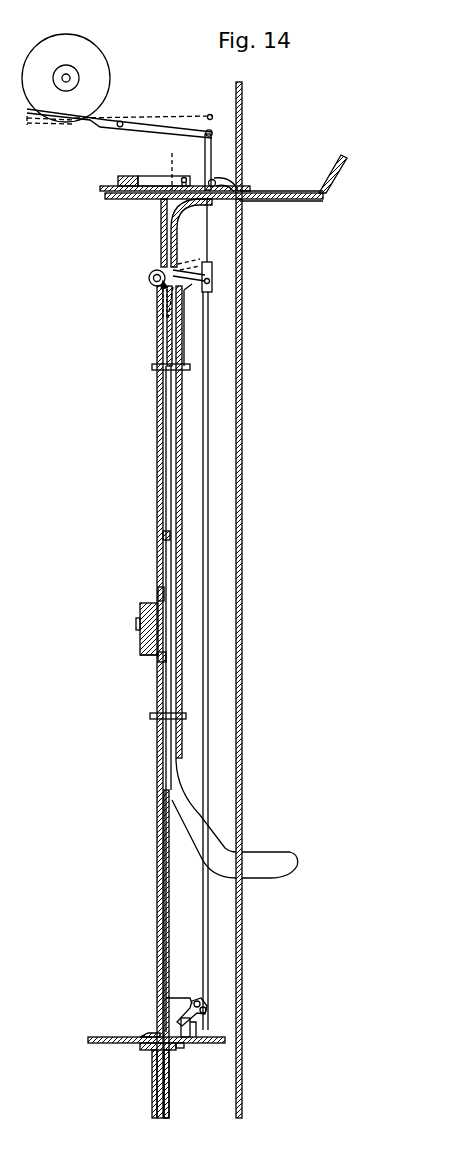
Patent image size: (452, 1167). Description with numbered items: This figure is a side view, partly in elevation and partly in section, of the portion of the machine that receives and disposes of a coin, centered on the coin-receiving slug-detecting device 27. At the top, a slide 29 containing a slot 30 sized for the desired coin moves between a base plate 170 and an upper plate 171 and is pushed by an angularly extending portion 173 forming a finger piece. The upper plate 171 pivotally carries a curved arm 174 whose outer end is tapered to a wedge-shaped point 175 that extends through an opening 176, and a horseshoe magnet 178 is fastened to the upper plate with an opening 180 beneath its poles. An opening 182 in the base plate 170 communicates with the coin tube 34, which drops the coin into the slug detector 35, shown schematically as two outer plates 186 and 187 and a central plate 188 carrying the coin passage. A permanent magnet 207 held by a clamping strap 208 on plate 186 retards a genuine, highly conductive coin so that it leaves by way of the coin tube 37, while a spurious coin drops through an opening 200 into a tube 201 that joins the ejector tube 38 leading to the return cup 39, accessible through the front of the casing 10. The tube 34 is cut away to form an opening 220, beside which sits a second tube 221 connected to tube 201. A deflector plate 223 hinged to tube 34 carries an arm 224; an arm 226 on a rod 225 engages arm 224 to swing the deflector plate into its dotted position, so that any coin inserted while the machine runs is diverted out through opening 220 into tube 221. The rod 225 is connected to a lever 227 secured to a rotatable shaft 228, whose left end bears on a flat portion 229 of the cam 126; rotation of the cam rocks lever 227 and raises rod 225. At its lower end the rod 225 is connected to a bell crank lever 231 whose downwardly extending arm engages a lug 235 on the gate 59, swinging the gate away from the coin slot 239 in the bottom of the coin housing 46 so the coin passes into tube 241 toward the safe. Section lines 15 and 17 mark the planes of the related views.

The casing 10 is at (242, 692).
The section line 15 is at (172, 153).
The section line 17 is at (265, 978).
The coin-receiving slug-detecting device 27 is at (314, 140).
The slide 29 is at (312, 201).
The slot 30 is at (288, 203).
The coin tube 34 is at (161, 246).
The slug detector 35 is at (146, 471).
The coin tube 37 is at (158, 926).
The ejector tube 38 is at (185, 805).
The return cup 39 is at (278, 854).
The coin housing 46 is at (104, 1038).
The gate 59 is at (183, 1048).
The cam 126 is at (86, 53).
The base plate 170 is at (268, 200).
The upper plate 171 is at (243, 192).
The angularly extending portion 173 is at (338, 176).
The curved arm 174 is at (216, 181).
The wedge-shaped point 175 is at (236, 190).
The opening 176 is at (240, 215).
The horseshoe magnet 178 is at (118, 180).
The opening 180 is at (197, 187).
The opening 182 is at (165, 201).
The outer plate 186 is at (157, 401).
The outer plate 187 is at (176, 421).
The central plate 188 is at (164, 536).
The opening 200 is at (168, 508).
The tube 201 is at (171, 565).
The permanent magnet 207 is at (142, 648).
The clamping strap 208 is at (138, 624).
The opening 220 is at (158, 284).
The second tube 221 is at (178, 340).
The deflector plate 223 is at (163, 305).
The arm 224 is at (213, 282).
The rod 225 is at (208, 496).
The arm 226 is at (213, 297).
The lever 227 is at (158, 122).
The rotatable shaft 228 is at (122, 121).
The flat portion 229 is at (48, 108).
The bell crank lever 231 is at (206, 1009).
The lug 235 is at (190, 1030).
The coin slot 239 is at (150, 1046).
The tube 241 is at (158, 1096).